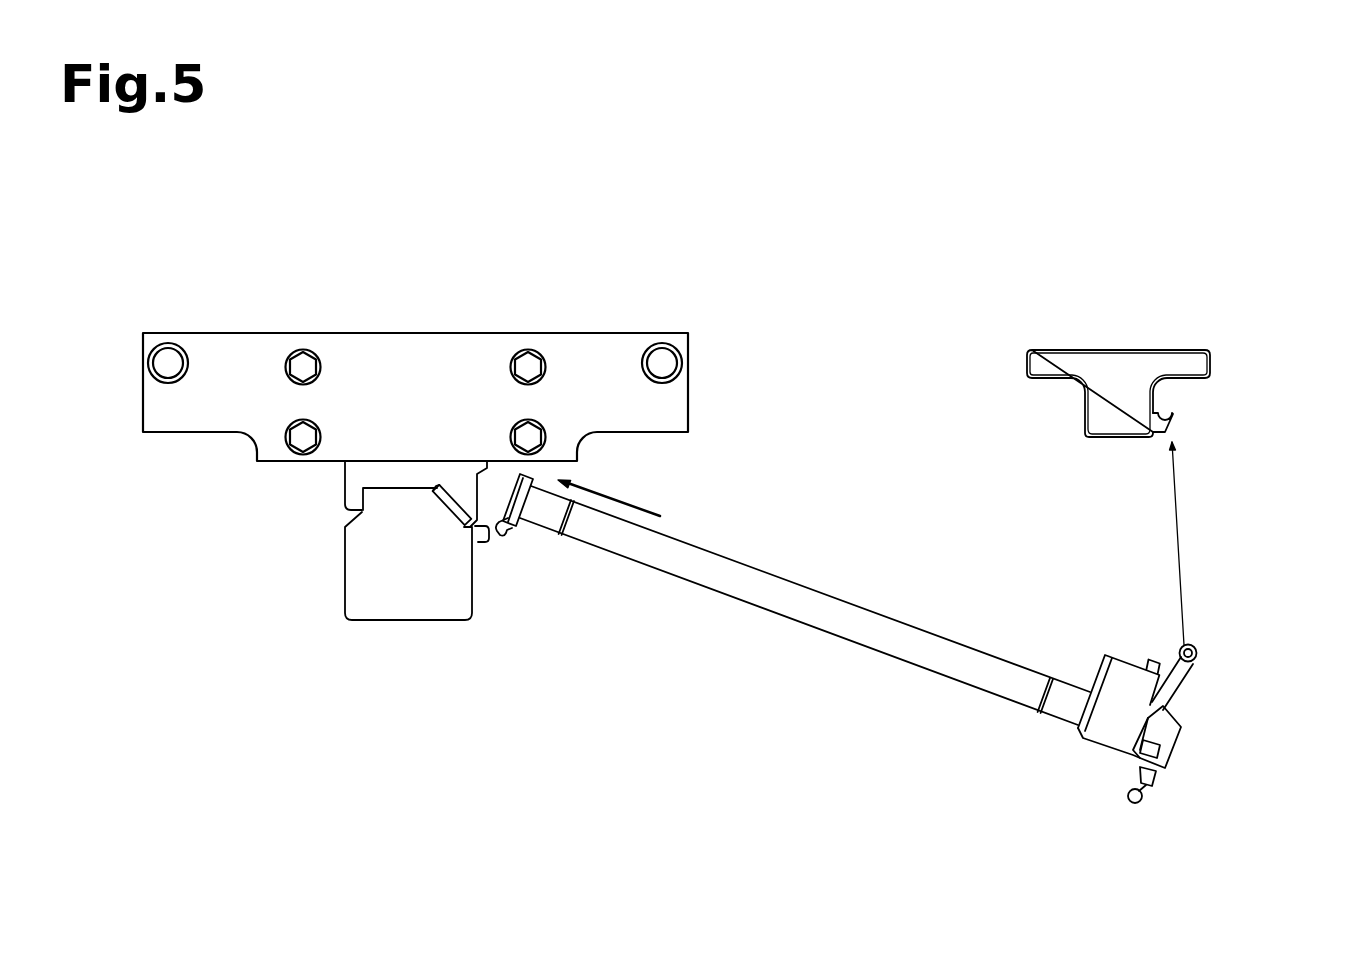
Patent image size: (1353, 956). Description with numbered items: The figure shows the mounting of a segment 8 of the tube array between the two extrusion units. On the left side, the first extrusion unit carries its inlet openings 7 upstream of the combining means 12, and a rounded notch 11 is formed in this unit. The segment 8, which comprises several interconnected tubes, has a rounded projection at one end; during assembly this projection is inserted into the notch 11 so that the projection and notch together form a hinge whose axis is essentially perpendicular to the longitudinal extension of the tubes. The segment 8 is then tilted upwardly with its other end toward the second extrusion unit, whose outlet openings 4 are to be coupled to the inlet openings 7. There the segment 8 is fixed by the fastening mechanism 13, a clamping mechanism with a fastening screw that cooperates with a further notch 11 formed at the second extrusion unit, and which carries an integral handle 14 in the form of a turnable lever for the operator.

The outlet openings 4 is at (1117, 442).
The inlet openings 7 is at (483, 490).
The segment 8 is at (772, 613).
The notch 11 is at (484, 543).
The combining means 12 is at (343, 588).
The fastening mechanism 13 is at (1197, 690).
The handle 14 is at (1145, 783).